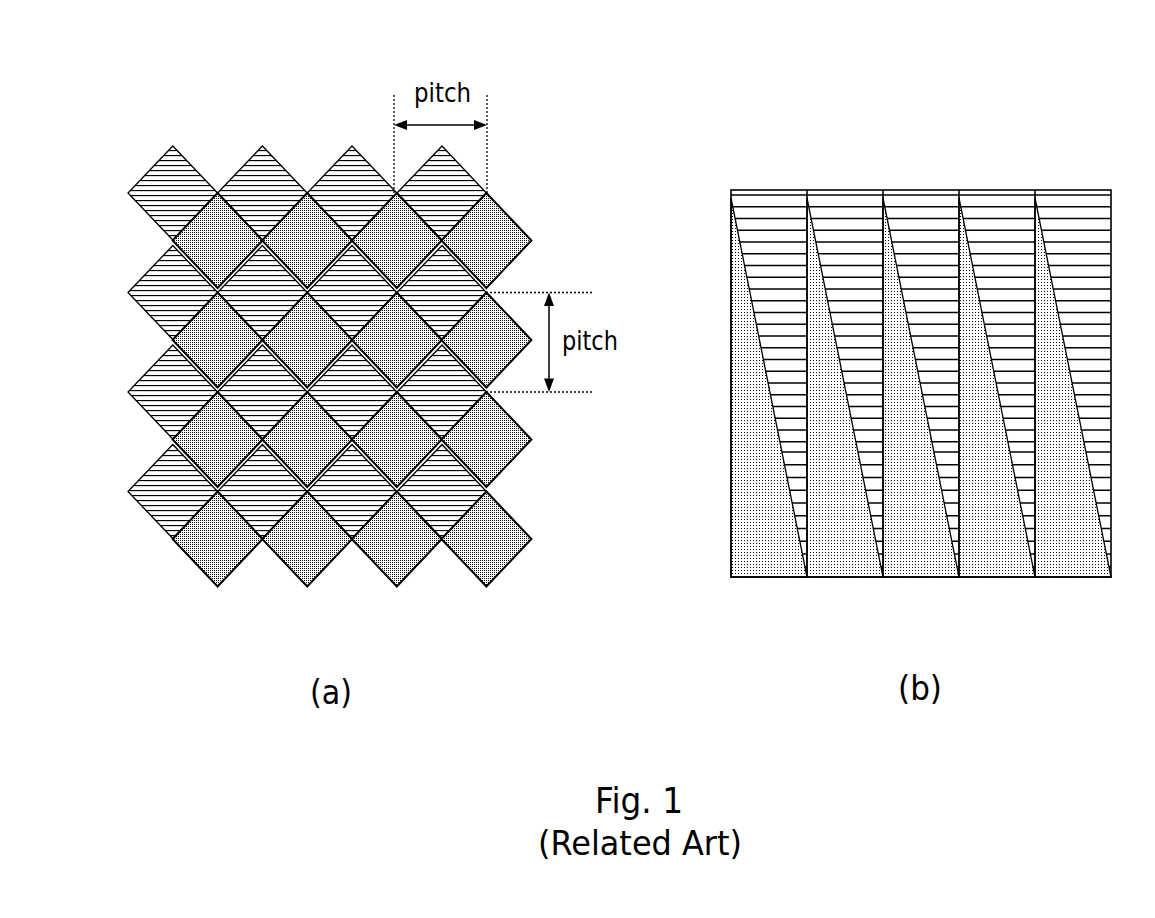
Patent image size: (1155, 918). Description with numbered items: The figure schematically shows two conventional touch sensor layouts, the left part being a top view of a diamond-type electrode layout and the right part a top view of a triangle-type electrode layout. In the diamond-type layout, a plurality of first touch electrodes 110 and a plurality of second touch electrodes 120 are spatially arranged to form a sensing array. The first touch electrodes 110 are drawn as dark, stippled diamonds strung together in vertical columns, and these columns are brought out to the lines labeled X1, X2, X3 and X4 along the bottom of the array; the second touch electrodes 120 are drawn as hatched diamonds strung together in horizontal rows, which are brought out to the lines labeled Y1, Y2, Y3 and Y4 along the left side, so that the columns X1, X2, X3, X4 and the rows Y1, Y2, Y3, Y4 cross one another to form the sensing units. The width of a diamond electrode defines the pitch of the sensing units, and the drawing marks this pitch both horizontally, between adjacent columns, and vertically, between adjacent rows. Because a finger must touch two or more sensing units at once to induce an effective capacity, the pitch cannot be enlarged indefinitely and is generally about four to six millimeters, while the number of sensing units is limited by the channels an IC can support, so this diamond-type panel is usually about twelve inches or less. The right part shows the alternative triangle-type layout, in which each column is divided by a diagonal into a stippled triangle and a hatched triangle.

The first touch electrode 110 is at (220, 252).
The second touch electrode 120 is at (352, 189).
The first X sensing line X1 is at (218, 586).
The second X sensing line X2 is at (307, 586).
The third X sensing line X3 is at (397, 586).
The fourth X sensing line X4 is at (486, 586).
The first Y sensing line Y1 is at (128, 492).
The second Y sensing line Y2 is at (128, 392).
The third Y sensing line Y3 is at (128, 292).
The fourth Y sensing line Y4 is at (128, 193).